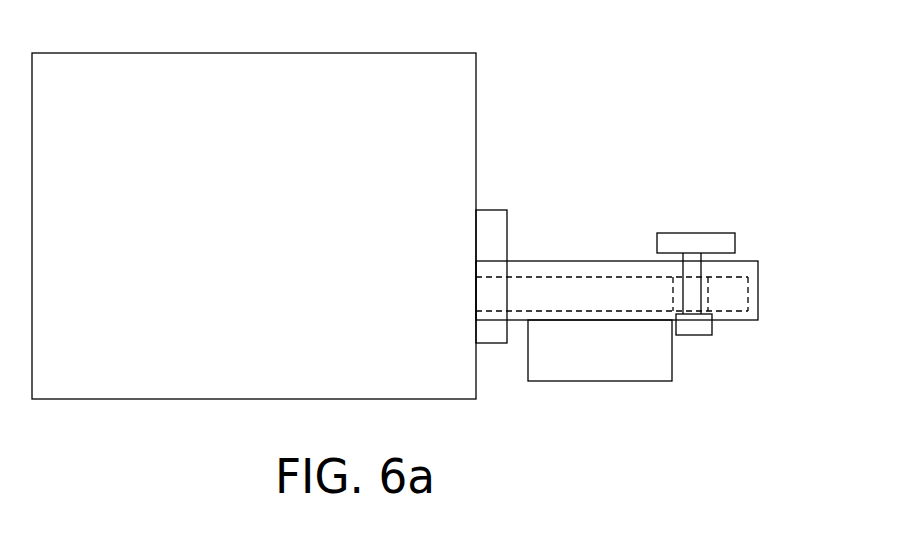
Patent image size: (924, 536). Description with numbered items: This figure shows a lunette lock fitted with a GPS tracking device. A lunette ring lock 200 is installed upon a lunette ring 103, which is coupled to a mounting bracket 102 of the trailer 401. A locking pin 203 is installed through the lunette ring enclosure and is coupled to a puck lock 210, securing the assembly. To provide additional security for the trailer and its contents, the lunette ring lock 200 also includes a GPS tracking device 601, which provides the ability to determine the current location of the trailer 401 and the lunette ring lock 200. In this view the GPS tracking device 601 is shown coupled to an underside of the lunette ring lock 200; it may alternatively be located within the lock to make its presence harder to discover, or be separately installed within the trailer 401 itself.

The trailer 401 is at (476, 83).
The mounting bracket 102 is at (494, 208).
The lunette ring lock 200 is at (564, 260).
The lunette ring 103 is at (746, 277).
The puck lock 210 is at (690, 233).
The locking pin 203 is at (697, 335).
The GPS tracking device 601 is at (599, 381).